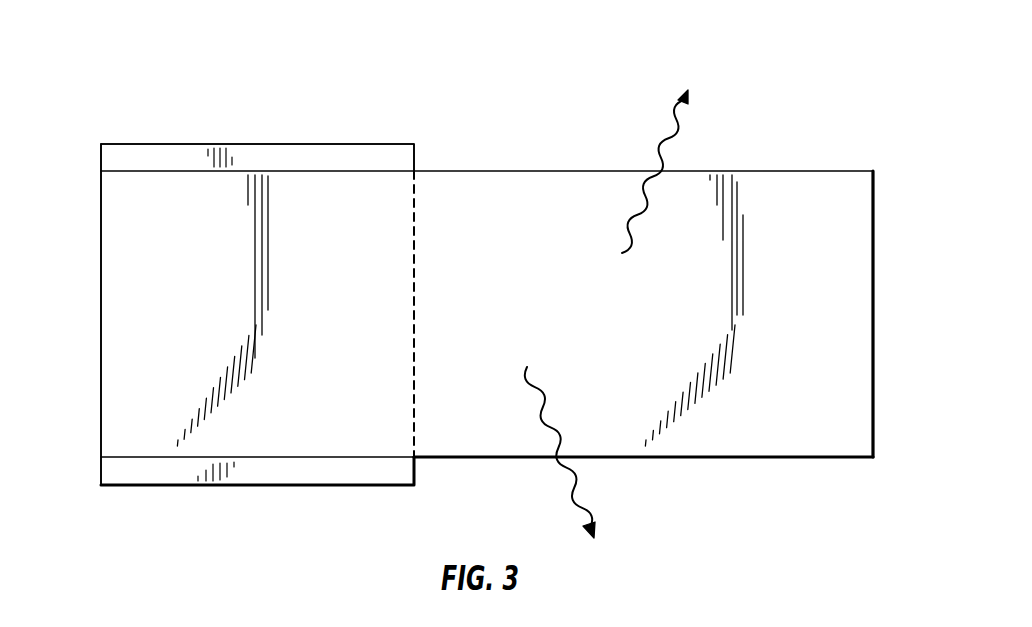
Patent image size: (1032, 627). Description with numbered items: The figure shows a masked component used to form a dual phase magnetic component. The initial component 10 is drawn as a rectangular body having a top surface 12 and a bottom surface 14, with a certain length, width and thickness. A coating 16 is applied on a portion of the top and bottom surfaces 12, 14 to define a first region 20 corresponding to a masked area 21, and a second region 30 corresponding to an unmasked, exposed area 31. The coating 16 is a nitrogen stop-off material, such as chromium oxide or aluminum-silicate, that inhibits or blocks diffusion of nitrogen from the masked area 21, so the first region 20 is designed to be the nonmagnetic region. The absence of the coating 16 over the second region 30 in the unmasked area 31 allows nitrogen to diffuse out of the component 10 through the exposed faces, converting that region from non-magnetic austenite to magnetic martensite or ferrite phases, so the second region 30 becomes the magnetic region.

The initial component 10 is at (776, 80).
The top surface 12 is at (478, 171).
The bottom surface 14 is at (456, 459).
The coating 16 is at (310, 158).
The first region 20 is at (160, 143).
The masked area 21 is at (200, 295).
The second region 30 is at (569, 147).
The unmasked exposed area 31 is at (835, 295).